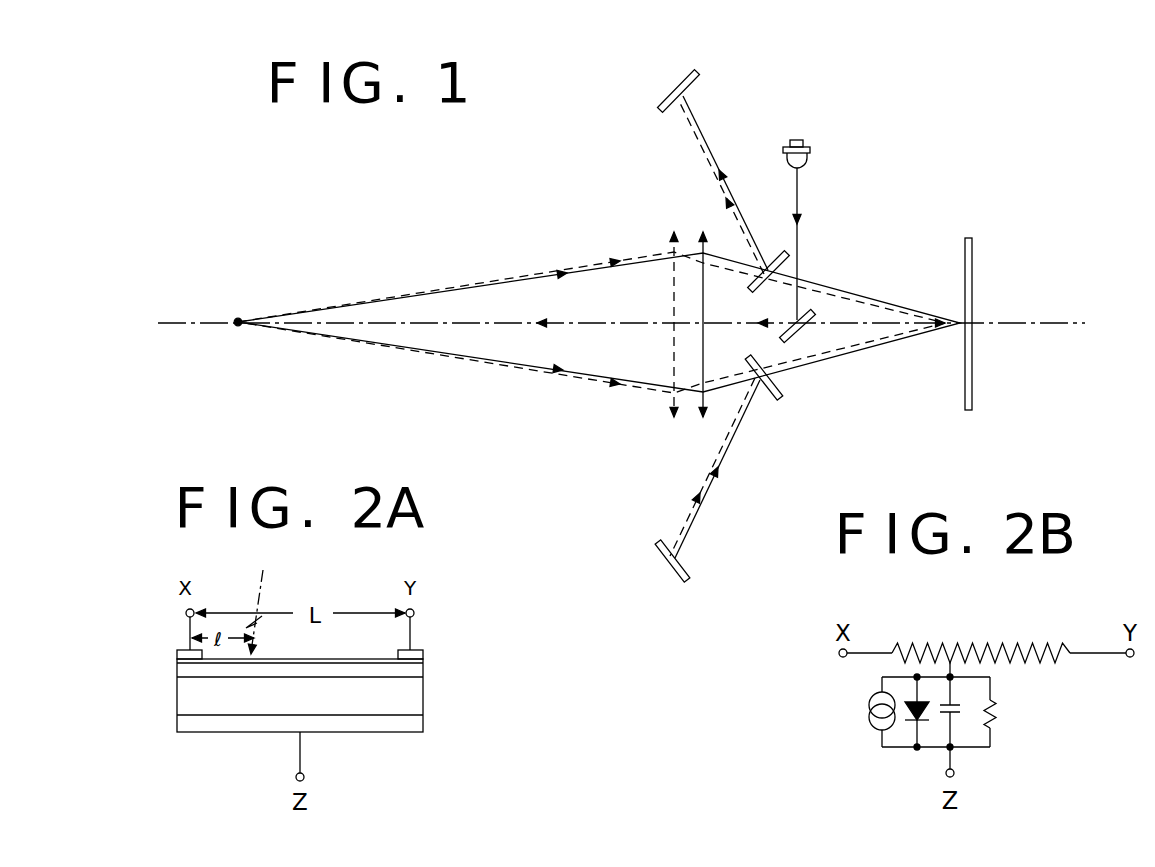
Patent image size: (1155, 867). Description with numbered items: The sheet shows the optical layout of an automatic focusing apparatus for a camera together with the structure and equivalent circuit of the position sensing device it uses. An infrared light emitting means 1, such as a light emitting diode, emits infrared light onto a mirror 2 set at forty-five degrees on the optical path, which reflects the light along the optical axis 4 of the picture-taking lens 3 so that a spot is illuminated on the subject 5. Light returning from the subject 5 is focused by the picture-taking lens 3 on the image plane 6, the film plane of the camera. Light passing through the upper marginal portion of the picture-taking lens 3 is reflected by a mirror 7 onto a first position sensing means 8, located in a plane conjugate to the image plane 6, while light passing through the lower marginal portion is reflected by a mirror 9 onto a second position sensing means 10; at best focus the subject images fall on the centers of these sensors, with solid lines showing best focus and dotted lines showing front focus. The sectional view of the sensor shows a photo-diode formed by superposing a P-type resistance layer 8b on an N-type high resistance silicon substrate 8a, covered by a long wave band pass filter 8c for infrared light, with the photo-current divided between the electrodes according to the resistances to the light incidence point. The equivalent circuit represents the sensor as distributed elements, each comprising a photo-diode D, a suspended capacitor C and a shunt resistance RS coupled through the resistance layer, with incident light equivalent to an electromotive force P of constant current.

In FIG. 1, the infrared light emitting means 1 is at (808, 158).
In FIG. 1, the mirror 2 is at (801, 310).
In FIG. 1, the picture-taking lens 3 is at (703, 280).
In FIG. 1, the optical axis 4 is at (395, 324).
In FIG. 1, the subject 5 is at (240, 318).
In FIG. 1, the image plane 6 is at (973, 252).
In FIG. 1, the mirror 7 is at (776, 255).
In FIG. 1, the first position sensing means 8 is at (682, 83).
In FIG. 1, the mirror 9 is at (778, 389).
In FIG. 1, the second position sensing means 10 is at (682, 562).
In FIG. 2A, the N-type high resistance silicon substrate 8a is at (420, 700).
In FIG. 2A, the P-type resistance layer 8b is at (420, 672).
In FIG. 2A, the long wave band pass filter 8c is at (327, 659).
In FIG. 2B, the electromotive force P is at (869, 712).
In FIG. 2B, the photo-diode D is at (926, 711).
In FIG. 2B, the suspended capacitor C is at (957, 708).
In FIG. 2B, the shunt resistance RS is at (997, 714).